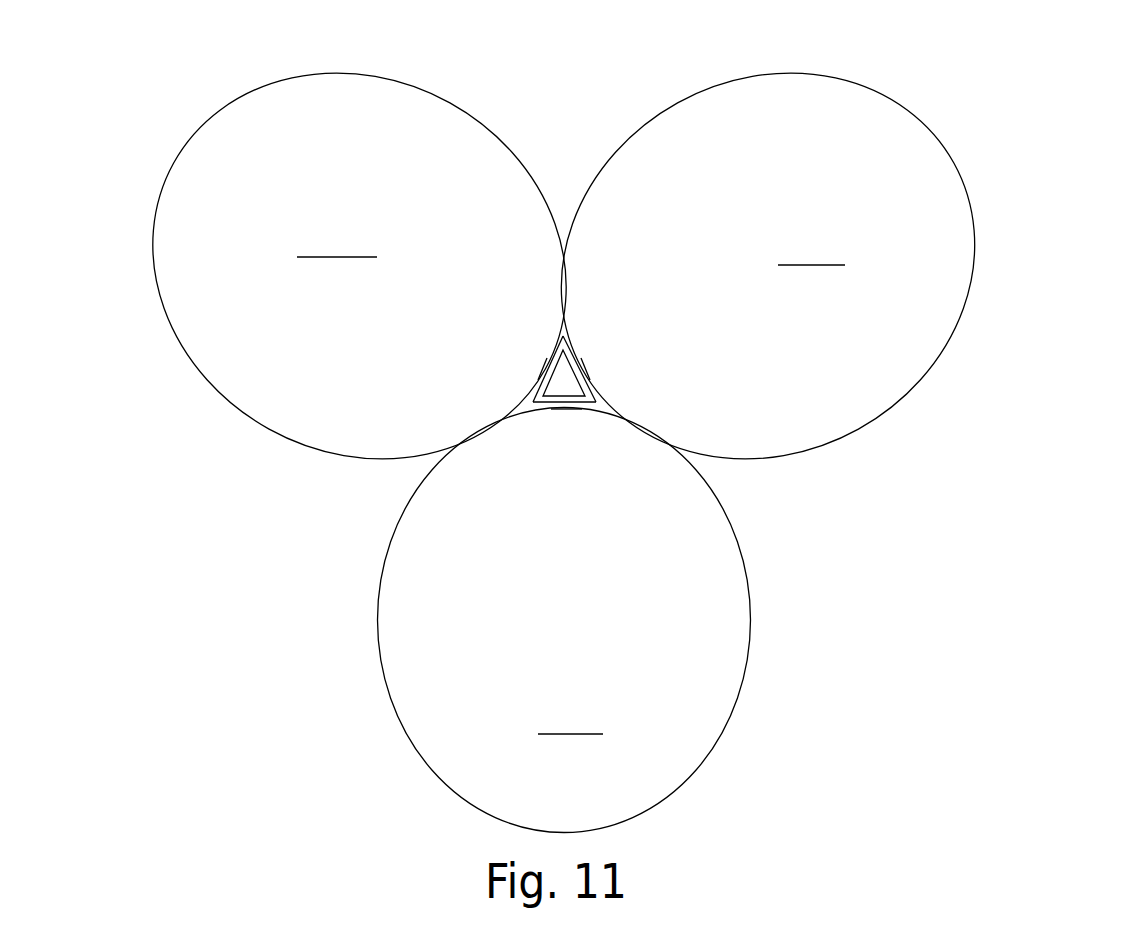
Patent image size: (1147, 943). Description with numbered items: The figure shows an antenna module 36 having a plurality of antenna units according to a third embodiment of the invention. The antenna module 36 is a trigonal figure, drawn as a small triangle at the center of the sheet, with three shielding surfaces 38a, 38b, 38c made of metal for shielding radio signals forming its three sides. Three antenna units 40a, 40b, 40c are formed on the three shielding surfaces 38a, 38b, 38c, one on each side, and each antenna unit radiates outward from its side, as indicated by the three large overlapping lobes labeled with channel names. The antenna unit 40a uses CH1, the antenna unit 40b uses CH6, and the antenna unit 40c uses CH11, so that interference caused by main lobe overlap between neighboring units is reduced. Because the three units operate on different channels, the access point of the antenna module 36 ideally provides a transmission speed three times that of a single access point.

The antenna module 36 is at (982, 120).
The shielding surface 38a is at (590, 410).
The shielding surface 38b is at (597, 389).
The shielding surface 38c is at (546, 364).
The antenna unit 40a is at (552, 406).
The antenna unit 40b is at (586, 364).
The antenna unit 40c is at (535, 388).